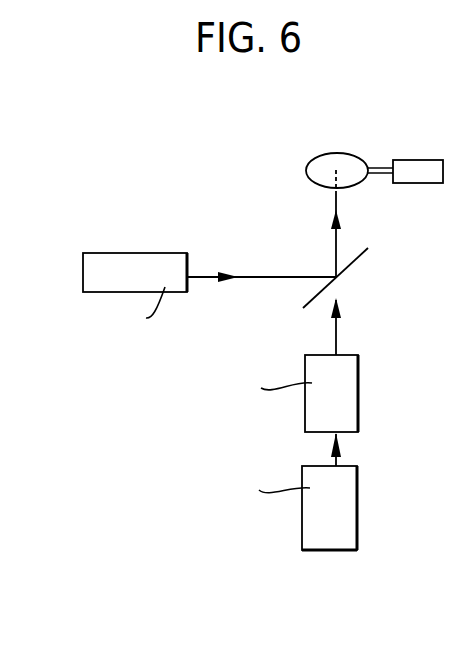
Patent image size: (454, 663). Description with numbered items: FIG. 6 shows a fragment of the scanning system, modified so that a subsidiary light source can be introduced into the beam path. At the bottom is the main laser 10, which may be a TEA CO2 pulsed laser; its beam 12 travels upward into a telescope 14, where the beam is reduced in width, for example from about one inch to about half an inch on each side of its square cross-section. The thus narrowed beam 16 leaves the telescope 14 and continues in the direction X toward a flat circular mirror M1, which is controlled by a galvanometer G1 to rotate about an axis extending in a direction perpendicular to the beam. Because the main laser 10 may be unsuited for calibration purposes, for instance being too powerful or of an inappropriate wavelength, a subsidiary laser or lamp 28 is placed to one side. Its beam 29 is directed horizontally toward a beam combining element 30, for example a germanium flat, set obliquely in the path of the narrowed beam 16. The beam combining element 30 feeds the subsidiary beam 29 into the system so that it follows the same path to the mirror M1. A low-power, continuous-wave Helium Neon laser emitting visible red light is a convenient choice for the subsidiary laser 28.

The laser 10 is at (352, 517).
The beam 12 is at (338, 456).
The telescope 14 is at (355, 400).
The narrowed beam 16 is at (337, 323).
The subsidiary laser or lamp 28 is at (130, 262).
The beam 29 is at (262, 277).
The beam combining element 30 is at (349, 269).
The mirror M1 is at (329, 155).
The galvanometer G1 is at (424, 165).